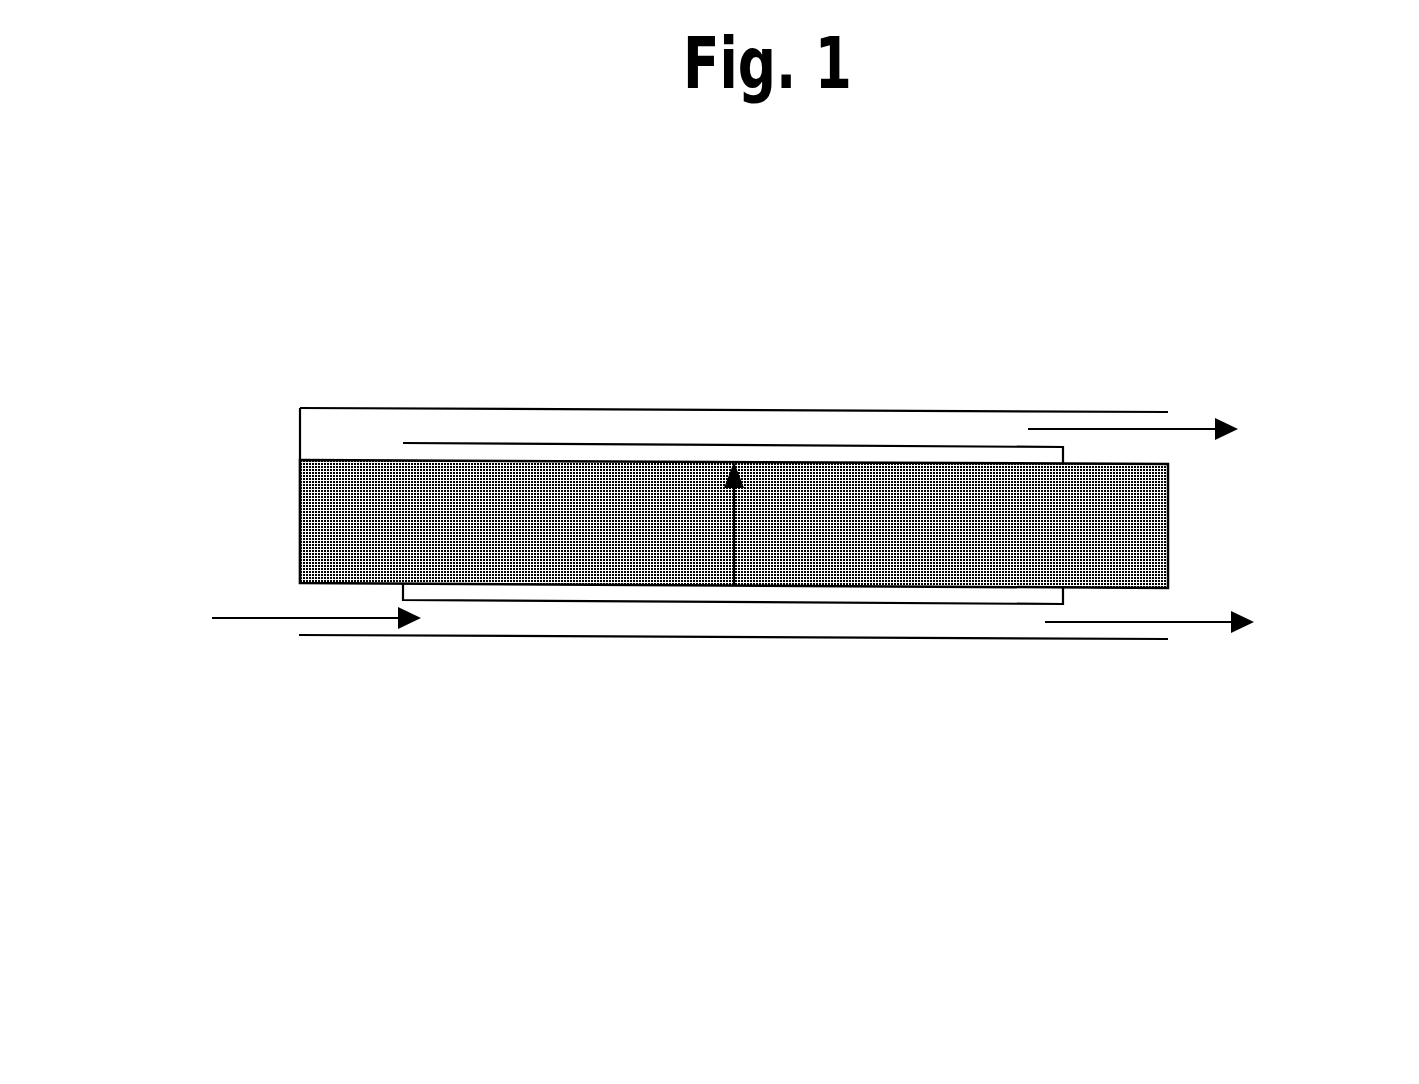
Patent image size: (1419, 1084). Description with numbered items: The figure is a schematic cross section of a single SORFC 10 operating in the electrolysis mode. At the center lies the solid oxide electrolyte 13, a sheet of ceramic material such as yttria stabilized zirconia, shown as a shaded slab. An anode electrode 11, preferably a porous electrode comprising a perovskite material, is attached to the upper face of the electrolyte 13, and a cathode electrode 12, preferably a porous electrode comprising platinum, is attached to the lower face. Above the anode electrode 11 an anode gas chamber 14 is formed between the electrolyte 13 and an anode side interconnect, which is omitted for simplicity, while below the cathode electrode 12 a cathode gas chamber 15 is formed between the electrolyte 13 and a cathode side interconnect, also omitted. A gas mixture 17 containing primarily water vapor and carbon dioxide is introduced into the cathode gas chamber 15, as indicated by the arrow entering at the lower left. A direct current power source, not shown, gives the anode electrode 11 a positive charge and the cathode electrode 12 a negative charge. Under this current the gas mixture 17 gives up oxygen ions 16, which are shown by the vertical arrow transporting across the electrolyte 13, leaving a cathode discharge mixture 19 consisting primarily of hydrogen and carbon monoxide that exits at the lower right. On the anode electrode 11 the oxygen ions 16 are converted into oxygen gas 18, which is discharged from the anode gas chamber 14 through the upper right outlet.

The SORFC 10 is at (691, 398).
The anode electrode 11 is at (542, 442).
The cathode electrode 12 is at (768, 603).
The solid oxide electrolyte 13 is at (923, 515).
The anode gas chamber 14 is at (733, 428).
The cathode gas chamber 15 is at (923, 622).
The oxygen ions 16 is at (734, 533).
The gas mixture 17 is at (265, 619).
The oxygen gas 18 is at (1185, 430).
The cathode discharge mixture 19 is at (1203, 623).